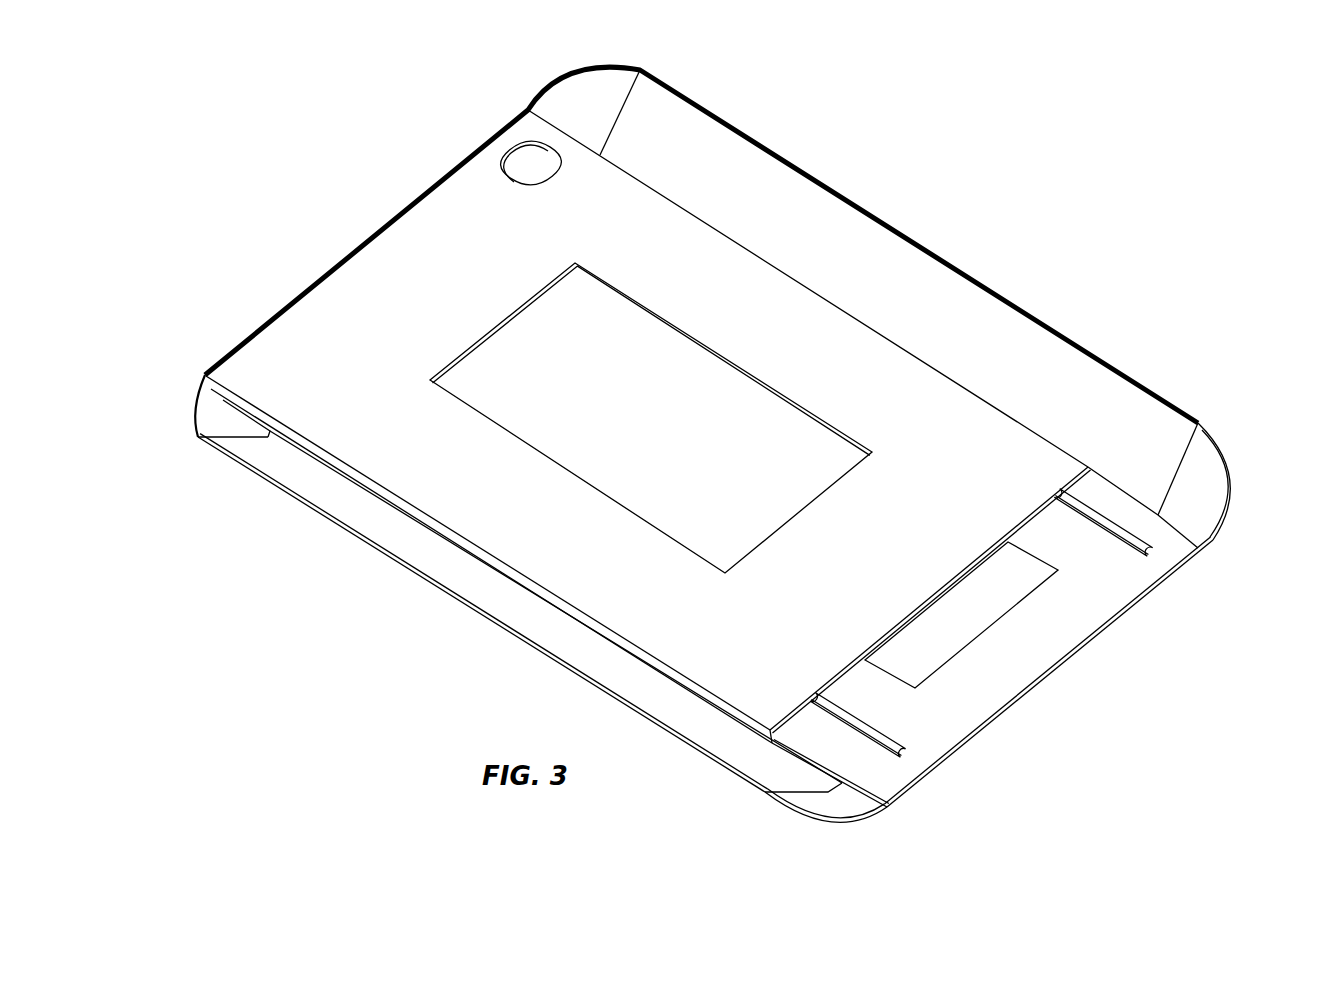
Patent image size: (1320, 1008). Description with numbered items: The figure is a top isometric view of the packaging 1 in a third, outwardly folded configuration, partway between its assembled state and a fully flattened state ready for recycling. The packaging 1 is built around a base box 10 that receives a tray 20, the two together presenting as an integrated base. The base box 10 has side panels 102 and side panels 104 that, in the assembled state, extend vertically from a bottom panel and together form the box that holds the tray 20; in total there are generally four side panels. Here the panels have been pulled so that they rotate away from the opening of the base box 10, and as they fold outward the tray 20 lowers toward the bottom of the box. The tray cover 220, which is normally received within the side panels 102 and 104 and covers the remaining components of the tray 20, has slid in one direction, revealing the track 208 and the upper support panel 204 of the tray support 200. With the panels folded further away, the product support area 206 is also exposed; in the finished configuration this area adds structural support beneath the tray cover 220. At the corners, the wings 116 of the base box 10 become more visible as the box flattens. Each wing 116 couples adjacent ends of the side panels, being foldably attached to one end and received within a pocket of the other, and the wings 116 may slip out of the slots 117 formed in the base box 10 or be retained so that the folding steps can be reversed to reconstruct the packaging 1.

The packaging 1 is at (1117, 203).
The base box 10 is at (853, 200).
The tray 20 is at (313, 325).
The tray support 200 is at (1042, 648).
The side panels 102 is at (438, 186).
The side panels 104 is at (950, 263).
The wings 116 is at (564, 92).
The slots 117 is at (638, 71).
The tray cover 220 is at (668, 236).
The product support area 206 is at (942, 612).
The track 208 is at (1058, 492).
The upper support panel 204 is at (962, 716).